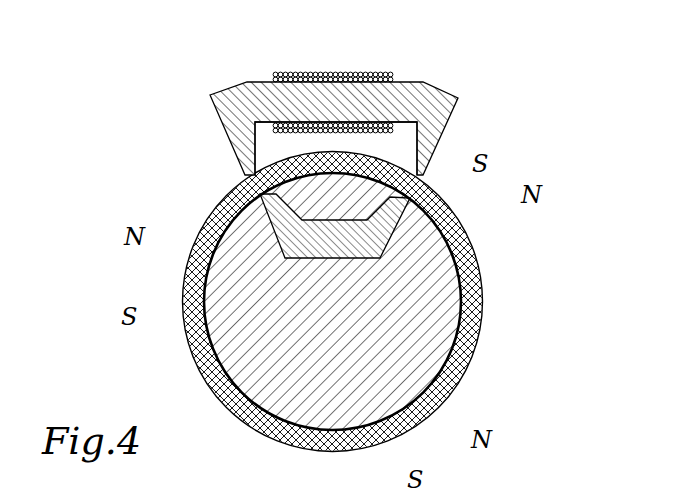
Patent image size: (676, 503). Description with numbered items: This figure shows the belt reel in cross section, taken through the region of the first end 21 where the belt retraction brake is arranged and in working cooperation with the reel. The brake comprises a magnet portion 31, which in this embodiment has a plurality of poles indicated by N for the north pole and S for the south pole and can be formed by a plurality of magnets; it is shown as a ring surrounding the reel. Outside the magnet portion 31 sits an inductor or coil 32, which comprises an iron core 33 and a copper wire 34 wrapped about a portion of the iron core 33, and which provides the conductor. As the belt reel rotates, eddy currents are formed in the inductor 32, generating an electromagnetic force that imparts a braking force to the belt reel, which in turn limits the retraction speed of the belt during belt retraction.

The first end 21 is at (433, 337).
The magnet portion 31 is at (478, 263).
The inductor or coil 32 is at (443, 93).
The iron core 33 is at (447, 123).
The copper wire 34 is at (360, 82).